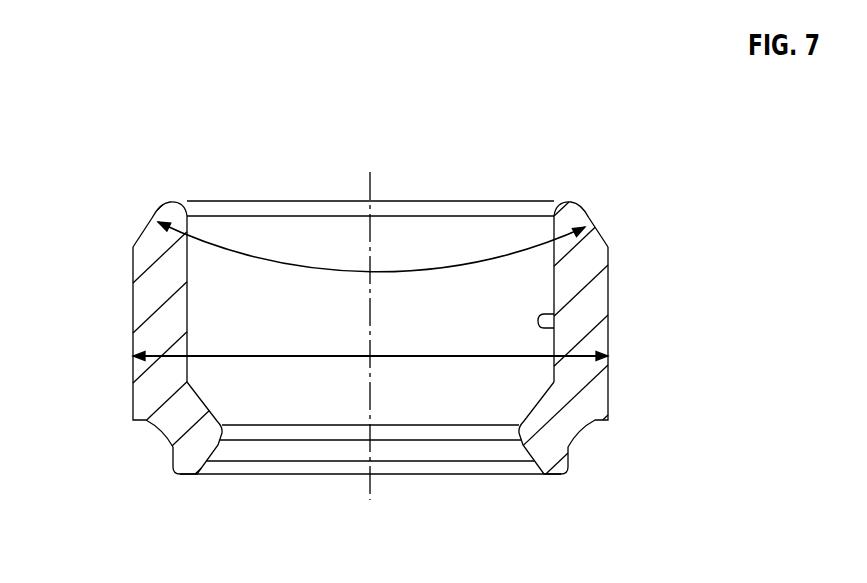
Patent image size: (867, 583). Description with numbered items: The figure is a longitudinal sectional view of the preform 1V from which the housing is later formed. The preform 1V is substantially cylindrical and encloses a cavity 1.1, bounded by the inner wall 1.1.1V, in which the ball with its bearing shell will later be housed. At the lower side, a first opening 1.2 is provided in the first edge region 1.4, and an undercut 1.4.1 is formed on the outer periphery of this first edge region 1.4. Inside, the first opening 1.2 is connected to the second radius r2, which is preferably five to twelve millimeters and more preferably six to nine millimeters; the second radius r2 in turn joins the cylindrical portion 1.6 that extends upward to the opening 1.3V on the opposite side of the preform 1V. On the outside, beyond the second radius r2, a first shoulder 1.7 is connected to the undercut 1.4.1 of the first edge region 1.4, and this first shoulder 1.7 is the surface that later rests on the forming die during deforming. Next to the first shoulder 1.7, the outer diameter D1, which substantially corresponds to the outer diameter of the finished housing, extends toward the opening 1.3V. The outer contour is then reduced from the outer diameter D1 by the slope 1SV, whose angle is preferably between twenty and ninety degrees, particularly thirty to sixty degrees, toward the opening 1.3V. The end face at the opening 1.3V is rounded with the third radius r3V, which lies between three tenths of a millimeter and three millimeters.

The preform 1V is at (382, 328).
The slope 1SV is at (151, 221).
The third radius r3V is at (173, 202).
The cylindrical portion 1.6 is at (187, 310).
The first shoulder 1.7 is at (147, 423).
The opening 1.3V is at (457, 200).
The inner wall 1.1.1V is at (554, 326).
The cavity 1.1 is at (482, 332).
The second radius r2 is at (540, 397).
The undercut 1.4.1 is at (565, 438).
The first edge region 1.4 is at (623, 427).
The first opening 1.2 is at (472, 470).
The outer diameter D1 is at (370, 346).